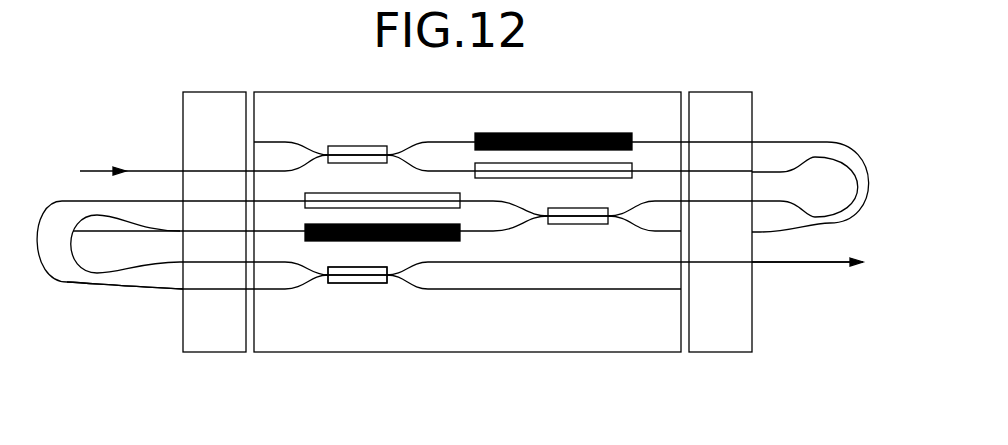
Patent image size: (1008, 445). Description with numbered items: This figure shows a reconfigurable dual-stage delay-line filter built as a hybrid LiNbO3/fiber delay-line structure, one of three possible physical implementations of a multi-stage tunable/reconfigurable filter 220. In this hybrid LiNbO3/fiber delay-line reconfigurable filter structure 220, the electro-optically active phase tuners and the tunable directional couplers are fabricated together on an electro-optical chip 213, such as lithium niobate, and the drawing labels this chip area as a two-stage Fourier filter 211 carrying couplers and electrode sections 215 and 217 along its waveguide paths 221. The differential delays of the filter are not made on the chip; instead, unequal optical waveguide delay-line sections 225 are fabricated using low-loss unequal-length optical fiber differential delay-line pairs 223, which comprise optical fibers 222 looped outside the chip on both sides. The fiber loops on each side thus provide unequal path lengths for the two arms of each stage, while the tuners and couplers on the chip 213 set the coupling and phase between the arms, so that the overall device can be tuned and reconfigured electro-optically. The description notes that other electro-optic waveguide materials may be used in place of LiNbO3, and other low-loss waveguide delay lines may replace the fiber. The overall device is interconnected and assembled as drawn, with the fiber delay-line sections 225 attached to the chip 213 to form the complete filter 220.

The 2-stage Fourier filter 211 is at (308, 374).
The electro-optical chip 213 is at (388, 352).
The electrode 215 is at (397, 193).
The directional coupler 217 is at (366, 284).
The hybrid LiNbO3/fiber delay-line reconfigurable filter structure 220 is at (677, 383).
The optical waveguide 221 is at (597, 261).
The optical fibers 222 is at (74, 226).
The optical fiber differential delay-line pairs 223 is at (108, 287).
The unequal optical waveguide delay-line sections 225 is at (213, 352).